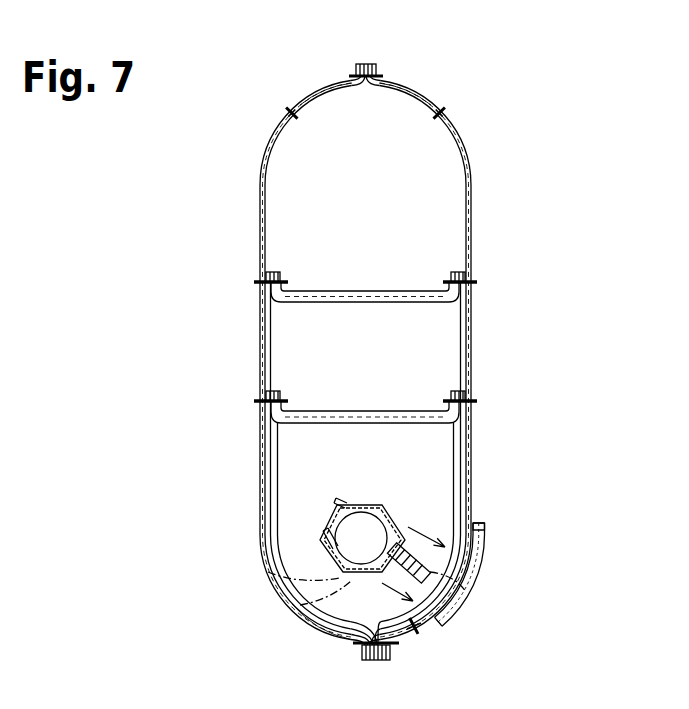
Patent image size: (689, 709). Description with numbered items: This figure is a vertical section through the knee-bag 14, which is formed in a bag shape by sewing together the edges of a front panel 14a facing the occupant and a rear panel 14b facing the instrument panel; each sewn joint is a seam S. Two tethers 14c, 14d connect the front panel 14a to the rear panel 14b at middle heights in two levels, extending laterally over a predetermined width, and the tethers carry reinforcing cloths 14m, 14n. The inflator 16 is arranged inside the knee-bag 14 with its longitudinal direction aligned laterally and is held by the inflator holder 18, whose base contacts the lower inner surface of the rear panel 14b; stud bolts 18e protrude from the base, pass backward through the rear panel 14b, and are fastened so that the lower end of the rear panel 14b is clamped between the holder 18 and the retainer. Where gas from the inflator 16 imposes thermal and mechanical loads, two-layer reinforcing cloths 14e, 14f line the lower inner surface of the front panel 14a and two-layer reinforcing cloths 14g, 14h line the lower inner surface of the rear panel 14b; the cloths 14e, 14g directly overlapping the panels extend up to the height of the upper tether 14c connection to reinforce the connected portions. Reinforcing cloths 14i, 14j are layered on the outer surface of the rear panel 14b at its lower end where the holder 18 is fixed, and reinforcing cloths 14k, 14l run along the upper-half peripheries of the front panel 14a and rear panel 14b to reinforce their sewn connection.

The knee-bag 14 is at (488, 130).
The front panel 14a is at (258, 205).
The rear panel 14b is at (473, 210).
The tether 14c is at (303, 276).
The tether 14d is at (418, 393).
The reinforcing cloth 14e is at (280, 352).
The reinforcing cloth 14f is at (280, 518).
The reinforcing cloth 14g is at (458, 338).
The reinforcing cloth 14h is at (460, 470).
The reinforcing cloth 14i is at (485, 524).
The reinforcing cloth 14j is at (487, 562).
The reinforcing cloth 14k is at (323, 95).
The reinforcing cloth 14l is at (397, 95).
The reinforcing cloth 14m is at (346, 304).
The reinforcing cloth 14n is at (350, 426).
The inflator 16 is at (270, 572).
The inflator holder 18 is at (292, 604).
The stud bolt 18e is at (478, 606).
The seam S is at (289, 112).